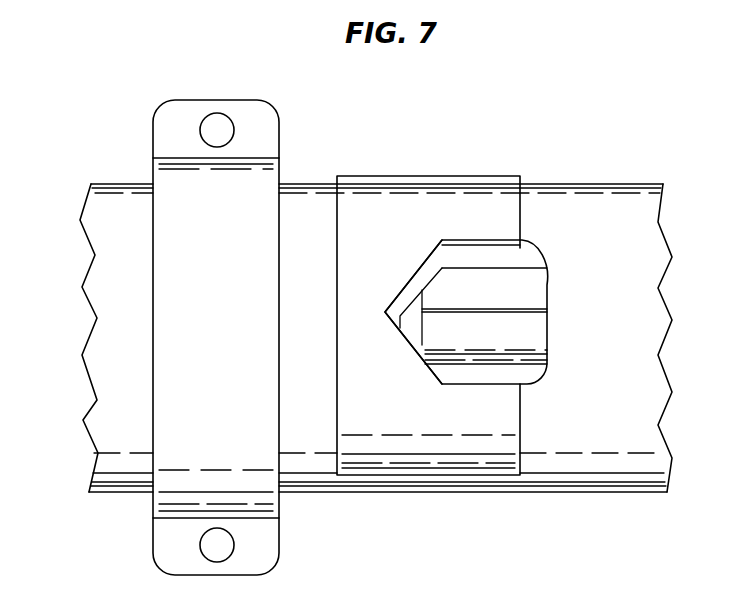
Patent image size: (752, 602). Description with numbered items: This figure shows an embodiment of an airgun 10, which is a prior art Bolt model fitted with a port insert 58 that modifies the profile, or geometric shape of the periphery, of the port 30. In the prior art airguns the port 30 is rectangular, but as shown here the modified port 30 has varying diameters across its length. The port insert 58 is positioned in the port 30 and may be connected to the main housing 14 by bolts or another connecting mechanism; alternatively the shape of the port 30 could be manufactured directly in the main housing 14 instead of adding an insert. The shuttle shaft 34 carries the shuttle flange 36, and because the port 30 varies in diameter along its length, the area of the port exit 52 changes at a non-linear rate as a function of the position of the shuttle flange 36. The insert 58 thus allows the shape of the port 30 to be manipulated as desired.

The airgun 10 is at (612, 148).
The main housing 14 is at (617, 493).
The port 30 is at (513, 272).
The shaft 34 is at (495, 338).
The shuttle flange 36 is at (417, 325).
The port exit 52 is at (392, 307).
The port insert 58 is at (400, 447).